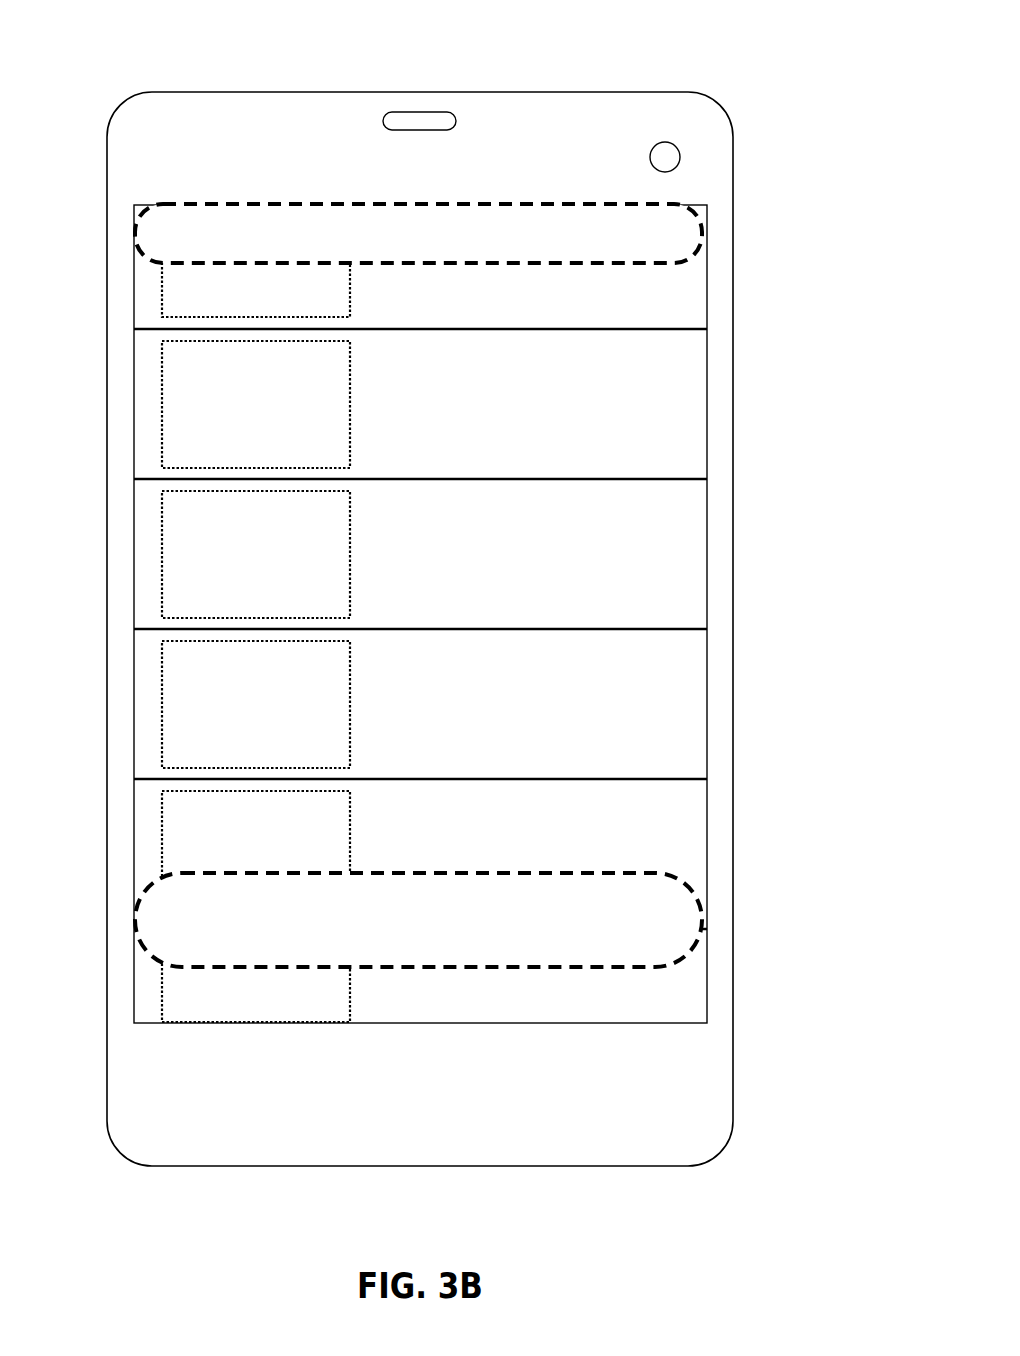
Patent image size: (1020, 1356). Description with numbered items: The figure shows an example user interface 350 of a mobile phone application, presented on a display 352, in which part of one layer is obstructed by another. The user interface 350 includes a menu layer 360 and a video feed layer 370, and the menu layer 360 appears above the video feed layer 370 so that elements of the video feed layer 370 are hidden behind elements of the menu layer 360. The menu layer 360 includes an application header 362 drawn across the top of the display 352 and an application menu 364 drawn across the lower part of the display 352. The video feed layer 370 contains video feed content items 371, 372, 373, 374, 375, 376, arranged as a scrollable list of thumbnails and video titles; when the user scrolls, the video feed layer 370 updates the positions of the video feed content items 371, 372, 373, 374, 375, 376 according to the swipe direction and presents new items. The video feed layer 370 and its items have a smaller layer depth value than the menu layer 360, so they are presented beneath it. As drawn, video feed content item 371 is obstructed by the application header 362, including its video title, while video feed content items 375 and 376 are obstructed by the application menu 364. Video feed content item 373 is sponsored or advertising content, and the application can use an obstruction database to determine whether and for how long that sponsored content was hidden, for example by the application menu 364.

The user interface 350 is at (140, 31).
The display 352 is at (348, 197).
The menu layer 360 is at (705, 206).
The application header 362 is at (668, 245).
The application menu 364 is at (683, 928).
The video feed layer 370 is at (143, 275).
The video feed content item 371 is at (143, 312).
The video feed content item 372 is at (143, 432).
The video feed content item 373 is at (143, 555).
The video feed content item 374 is at (143, 725).
The video feed content item 375 is at (143, 827).
The video feed content item 376 is at (143, 995).